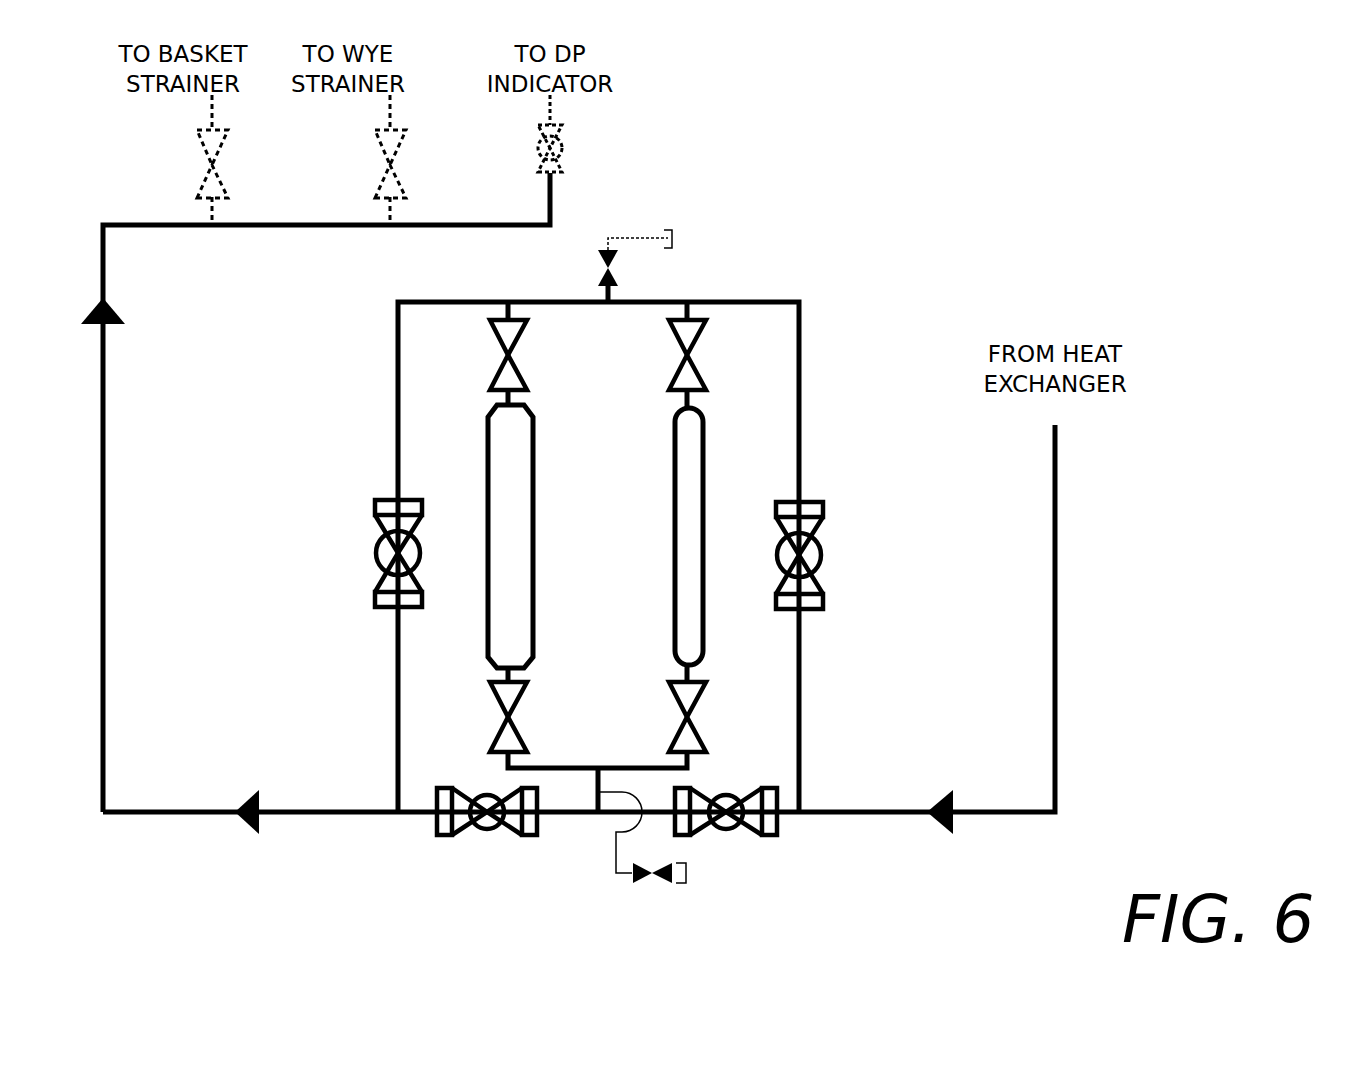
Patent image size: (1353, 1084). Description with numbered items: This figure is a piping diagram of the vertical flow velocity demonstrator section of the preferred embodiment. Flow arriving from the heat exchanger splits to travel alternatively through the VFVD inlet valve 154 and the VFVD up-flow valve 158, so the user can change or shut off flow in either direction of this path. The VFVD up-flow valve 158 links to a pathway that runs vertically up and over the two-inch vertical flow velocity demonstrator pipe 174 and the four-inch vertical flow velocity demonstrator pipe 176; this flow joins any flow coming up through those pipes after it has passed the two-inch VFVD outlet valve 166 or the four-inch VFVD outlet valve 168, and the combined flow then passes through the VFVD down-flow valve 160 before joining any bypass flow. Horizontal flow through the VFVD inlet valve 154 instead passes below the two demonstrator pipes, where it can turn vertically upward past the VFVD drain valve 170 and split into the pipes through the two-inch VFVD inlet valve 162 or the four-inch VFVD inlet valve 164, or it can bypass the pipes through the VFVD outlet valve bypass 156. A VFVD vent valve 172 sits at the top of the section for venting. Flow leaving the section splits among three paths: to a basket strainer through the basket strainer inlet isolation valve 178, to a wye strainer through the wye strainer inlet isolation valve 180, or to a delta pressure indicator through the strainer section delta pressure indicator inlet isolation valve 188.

The VFVD inlet valve 154 is at (740, 856).
The VFVD outlet valve bypass 156 is at (490, 855).
The VFVD up-flow valve 158 is at (842, 557).
The VFVD down-flow valve 160 is at (355, 560).
The 2" VFVD inlet valve 162 is at (718, 714).
The 4" VFVD inlet valve 164 is at (480, 716).
The 2" VFVD outlet valve 166 is at (718, 360).
The 4" VFVD outlet valve 168 is at (480, 353).
The VFVD drain valve 170 is at (652, 898).
The VFVD vent valve 172 is at (630, 268).
The 2" vertical flow velocity demonstrator pipe 174 is at (650, 481).
The 4" vertical flow velocity demonstrator pipe 176 is at (555, 624).
The basket strainer inlet isolation valve 178 is at (240, 165).
The wye strainer inlet isolation valve 180 is at (418, 165).
The strainer section delta pressure indicator inlet isolation valve 188 is at (578, 148).